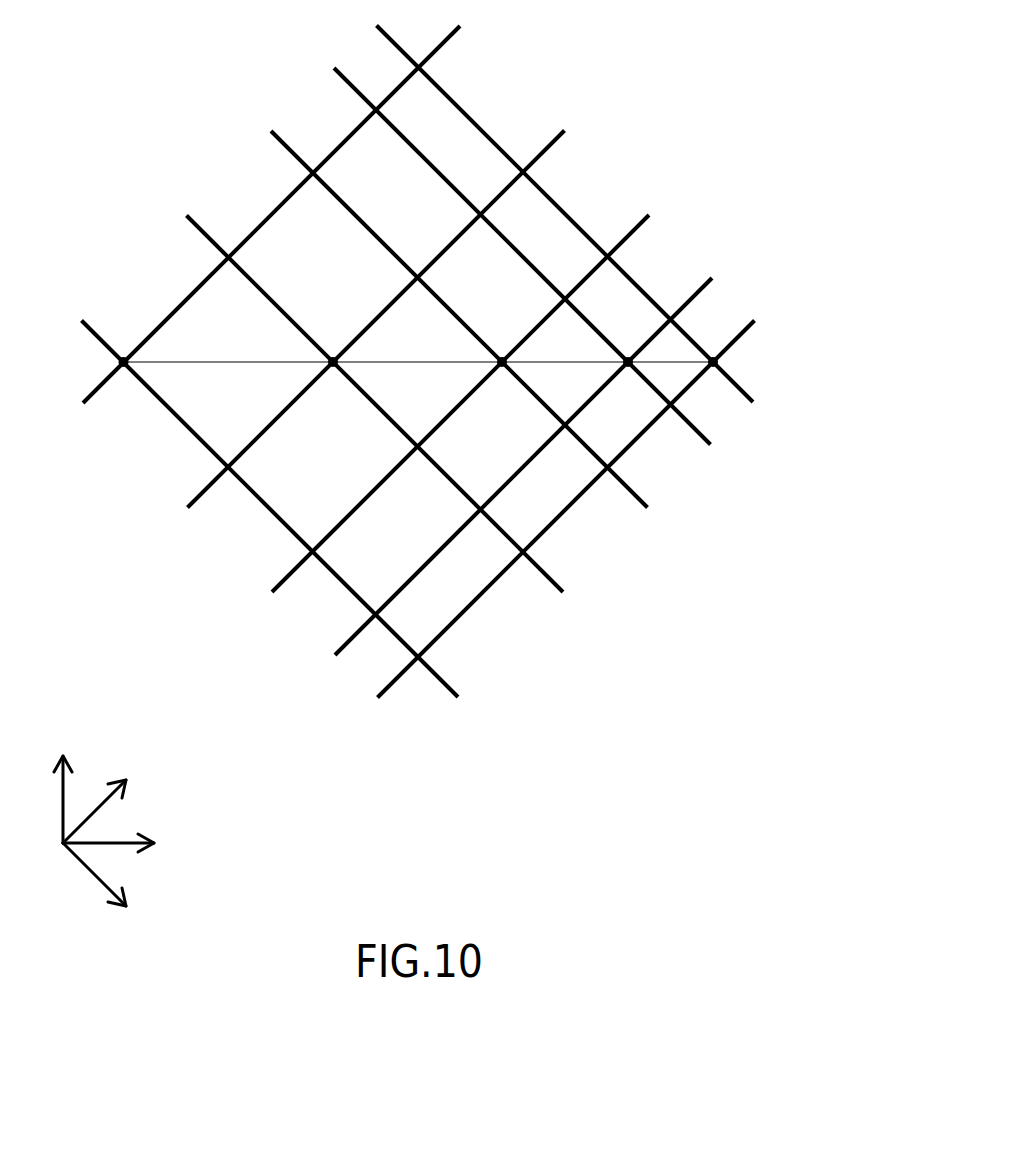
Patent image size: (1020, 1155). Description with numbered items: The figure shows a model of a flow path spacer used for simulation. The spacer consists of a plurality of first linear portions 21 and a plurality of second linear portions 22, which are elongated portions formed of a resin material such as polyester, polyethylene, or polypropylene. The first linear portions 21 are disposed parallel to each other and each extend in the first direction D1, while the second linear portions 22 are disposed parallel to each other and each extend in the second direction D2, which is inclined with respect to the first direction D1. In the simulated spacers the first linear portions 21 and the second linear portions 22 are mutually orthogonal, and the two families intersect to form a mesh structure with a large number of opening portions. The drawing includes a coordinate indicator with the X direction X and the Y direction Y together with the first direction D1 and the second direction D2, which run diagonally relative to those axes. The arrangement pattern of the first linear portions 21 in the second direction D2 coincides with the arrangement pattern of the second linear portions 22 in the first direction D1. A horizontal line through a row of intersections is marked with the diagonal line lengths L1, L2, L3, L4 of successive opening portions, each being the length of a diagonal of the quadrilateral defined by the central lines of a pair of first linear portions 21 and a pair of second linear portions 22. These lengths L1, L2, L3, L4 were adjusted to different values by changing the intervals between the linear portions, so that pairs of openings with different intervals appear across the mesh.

The first linear portion 21 is at (91, 399).
The second linear portion 22 is at (752, 388).
The diagonal line length L1 is at (226, 350).
The diagonal line length L2 is at (415, 350).
The diagonal line length L3 is at (562, 350).
The diagonal line length L4 is at (670, 350).
The X direction X is at (120, 844).
The Y direction Y is at (63, 782).
The first direction D1 is at (112, 800).
The second direction D2 is at (112, 885).